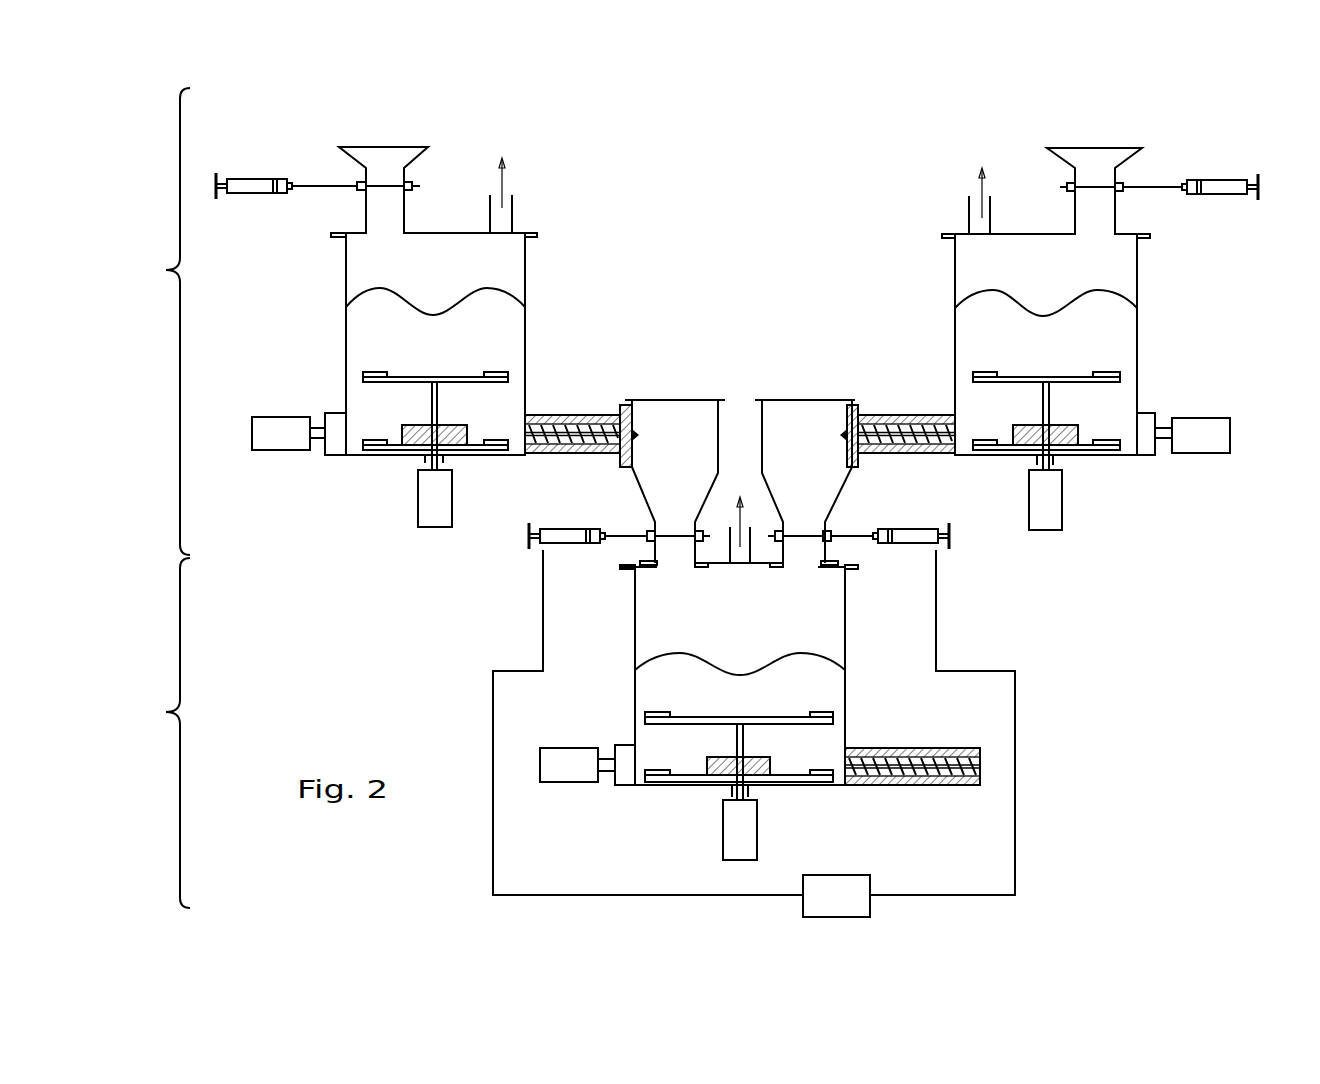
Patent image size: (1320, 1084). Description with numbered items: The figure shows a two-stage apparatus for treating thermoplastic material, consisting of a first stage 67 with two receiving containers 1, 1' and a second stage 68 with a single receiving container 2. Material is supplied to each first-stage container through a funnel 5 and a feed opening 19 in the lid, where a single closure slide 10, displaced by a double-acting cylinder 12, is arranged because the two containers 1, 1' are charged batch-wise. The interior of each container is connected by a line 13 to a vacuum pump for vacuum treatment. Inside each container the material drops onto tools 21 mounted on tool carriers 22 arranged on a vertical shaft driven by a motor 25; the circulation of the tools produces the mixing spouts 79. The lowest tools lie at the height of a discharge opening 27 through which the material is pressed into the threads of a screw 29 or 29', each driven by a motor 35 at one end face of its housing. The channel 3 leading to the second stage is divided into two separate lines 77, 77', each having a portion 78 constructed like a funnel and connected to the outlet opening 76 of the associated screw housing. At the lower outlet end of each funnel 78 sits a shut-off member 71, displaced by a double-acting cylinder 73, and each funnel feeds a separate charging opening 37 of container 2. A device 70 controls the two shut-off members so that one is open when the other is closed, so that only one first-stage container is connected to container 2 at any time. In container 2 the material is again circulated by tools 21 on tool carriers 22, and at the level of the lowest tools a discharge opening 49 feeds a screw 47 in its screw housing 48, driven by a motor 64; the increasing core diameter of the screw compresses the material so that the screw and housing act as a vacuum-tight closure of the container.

The receiving container 1 is at (409, 301).
The receiving container 1' is at (1015, 301).
The receiving container 2 is at (623, 690).
The channel 3 is at (727, 383).
The funnel 5 is at (382, 155).
The closure slide 10 is at (390, 185).
The double-acting cylinder 12 is at (262, 177).
The line 13 is at (513, 213).
The feed opening 19 is at (387, 232).
The tools 21 is at (378, 373).
The tool carrier 22 is at (430, 382).
The motor 25 is at (435, 500).
The discharge opening 27 is at (407, 445).
The screw 29 is at (572, 390).
The screw 29' is at (906, 391).
The motor 35 is at (270, 445).
The charging opening 37 is at (672, 563).
The screw 47 is at (887, 773).
The screw housing 48 is at (938, 785).
The discharge opening 49 is at (773, 767).
The motor 64 is at (558, 777).
The first stage 67 is at (163, 321).
The second stage 68 is at (163, 733).
The device 70 is at (826, 908).
The shut-off member 71 is at (670, 533).
The double-acting cylinder 73 is at (558, 545).
The outlet opening 76 is at (637, 437).
The line 77 is at (664, 446).
The line 77' is at (806, 446).
The funnel portion 78 is at (643, 502).
The mixing spout 79 is at (473, 288).